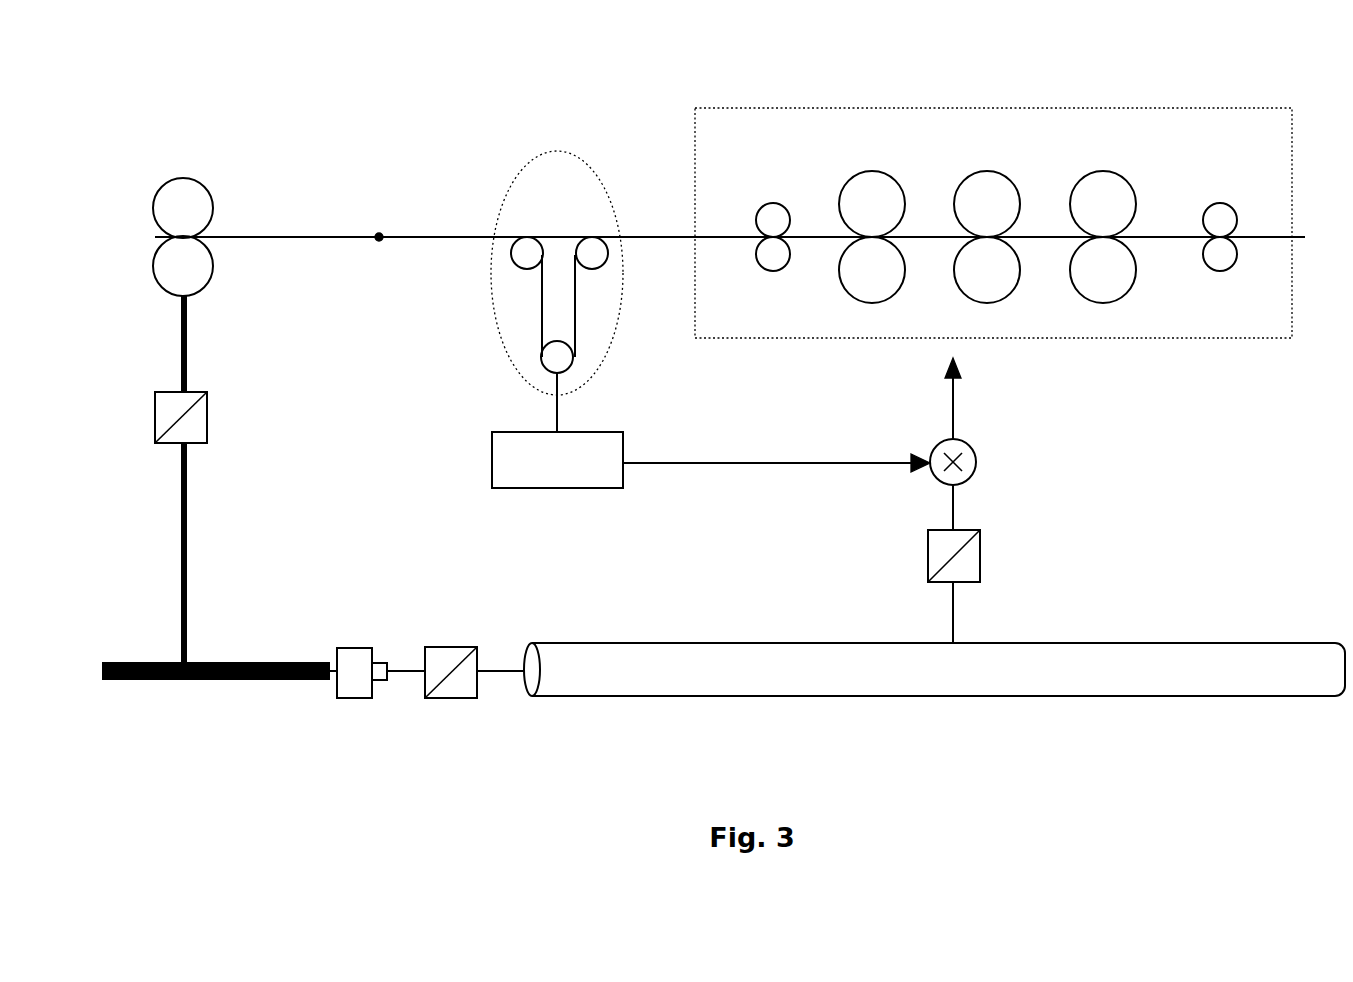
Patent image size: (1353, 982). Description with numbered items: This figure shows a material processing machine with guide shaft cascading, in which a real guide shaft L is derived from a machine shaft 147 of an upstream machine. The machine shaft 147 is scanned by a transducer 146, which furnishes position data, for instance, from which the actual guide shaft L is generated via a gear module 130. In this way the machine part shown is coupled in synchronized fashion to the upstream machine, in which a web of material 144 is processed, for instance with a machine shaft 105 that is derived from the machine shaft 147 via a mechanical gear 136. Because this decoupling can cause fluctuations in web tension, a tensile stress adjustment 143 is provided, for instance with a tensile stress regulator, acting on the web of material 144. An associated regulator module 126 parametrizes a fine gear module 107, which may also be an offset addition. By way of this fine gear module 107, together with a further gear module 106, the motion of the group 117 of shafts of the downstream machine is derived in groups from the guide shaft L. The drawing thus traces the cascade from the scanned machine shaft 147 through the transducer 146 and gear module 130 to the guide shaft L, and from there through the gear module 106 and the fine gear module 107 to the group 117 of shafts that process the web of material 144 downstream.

The machine shaft 105 is at (208, 178).
The web of material 144 is at (376, 245).
The tensile stress adjustment 143 is at (523, 177).
The group of shafts 117 is at (1048, 107).
The regulator module 126 is at (492, 465).
The fine gear module 107 is at (980, 460).
The gear module 106 is at (980, 553).
The guide shaft L is at (715, 660).
The mechanical gear 136 is at (207, 422).
The machine shaft 147 is at (263, 678).
The transducer 146 is at (352, 698).
The gear module 130 is at (450, 698).